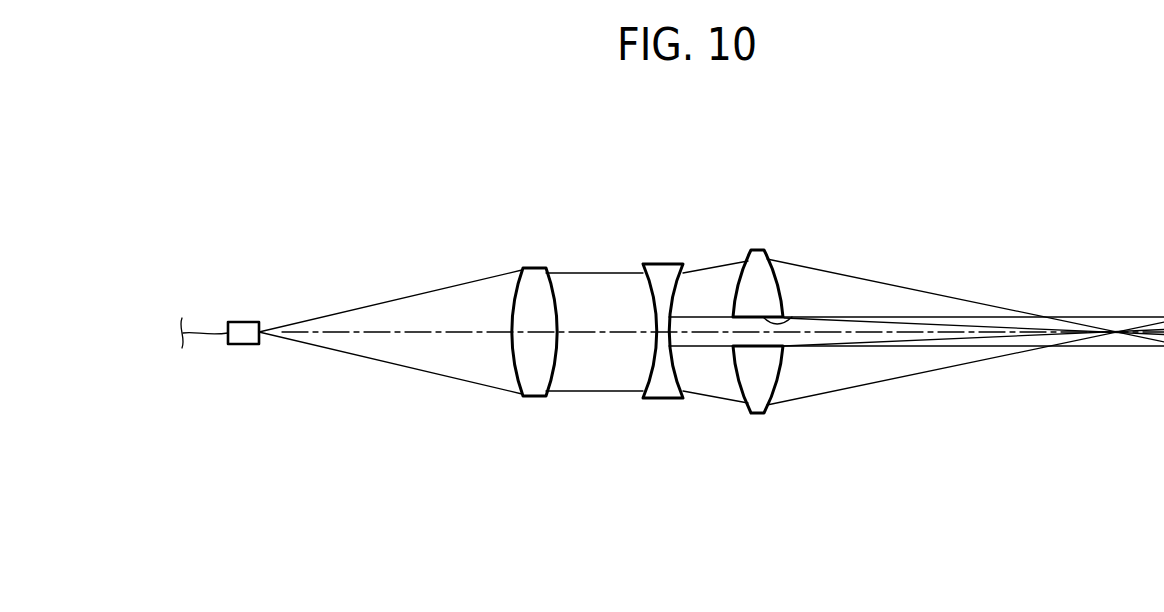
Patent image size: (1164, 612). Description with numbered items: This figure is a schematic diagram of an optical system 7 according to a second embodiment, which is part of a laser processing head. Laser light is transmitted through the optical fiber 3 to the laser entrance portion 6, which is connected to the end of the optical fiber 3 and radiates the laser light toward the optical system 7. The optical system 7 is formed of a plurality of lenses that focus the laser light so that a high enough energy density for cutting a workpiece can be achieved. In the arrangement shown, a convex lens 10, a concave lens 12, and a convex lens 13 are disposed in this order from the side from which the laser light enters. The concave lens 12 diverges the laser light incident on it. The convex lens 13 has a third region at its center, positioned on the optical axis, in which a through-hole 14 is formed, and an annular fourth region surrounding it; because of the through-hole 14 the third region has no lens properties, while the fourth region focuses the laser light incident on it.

The optical fiber 3 is at (203, 338).
The laser entrance portion 6 is at (242, 321).
The optical system 7 is at (816, 175).
The convex lens 10 is at (535, 398).
The concave lens 12 is at (661, 400).
The convex lens 13 is at (748, 414).
The through-hole 14 is at (786, 321).